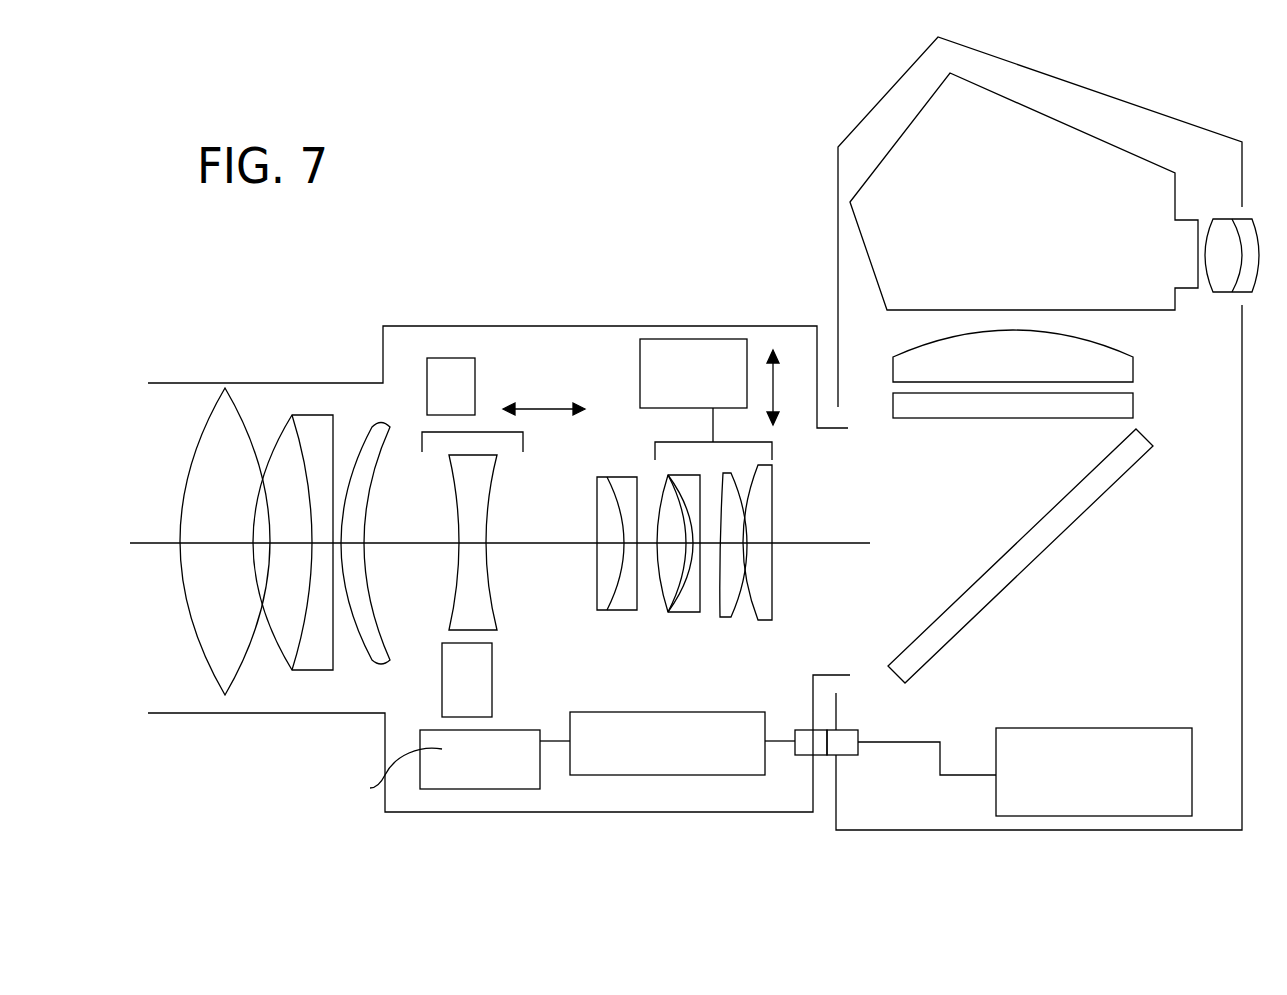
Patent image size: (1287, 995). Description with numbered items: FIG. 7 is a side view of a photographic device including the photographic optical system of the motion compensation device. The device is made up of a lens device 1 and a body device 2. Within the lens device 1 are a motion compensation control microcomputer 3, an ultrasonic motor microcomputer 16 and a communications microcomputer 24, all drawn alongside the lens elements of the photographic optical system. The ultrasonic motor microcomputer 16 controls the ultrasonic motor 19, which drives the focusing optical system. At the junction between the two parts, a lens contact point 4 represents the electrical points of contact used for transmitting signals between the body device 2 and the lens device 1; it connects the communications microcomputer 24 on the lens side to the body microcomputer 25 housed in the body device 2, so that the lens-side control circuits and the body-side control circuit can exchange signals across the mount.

The lens device 1 is at (277, 396).
The body device 2 is at (1178, 120).
The motion compensation control microcomputer 3 is at (722, 349).
The lens contact point 4 is at (807, 747).
The ultrasonic motor microcomputer 16 is at (510, 770).
The ultrasonic motor 19 is at (432, 368).
The communications microcomputer 24 is at (632, 767).
The body microcomputer 25 is at (1069, 806).